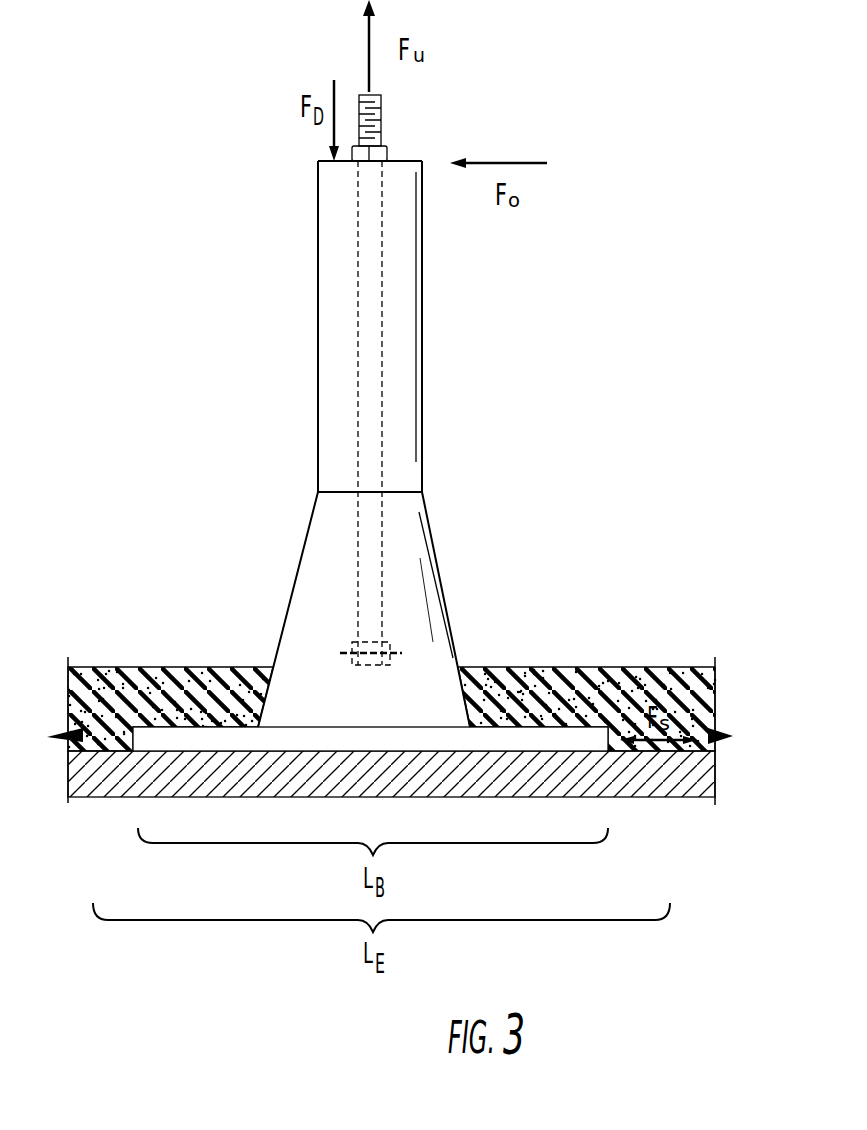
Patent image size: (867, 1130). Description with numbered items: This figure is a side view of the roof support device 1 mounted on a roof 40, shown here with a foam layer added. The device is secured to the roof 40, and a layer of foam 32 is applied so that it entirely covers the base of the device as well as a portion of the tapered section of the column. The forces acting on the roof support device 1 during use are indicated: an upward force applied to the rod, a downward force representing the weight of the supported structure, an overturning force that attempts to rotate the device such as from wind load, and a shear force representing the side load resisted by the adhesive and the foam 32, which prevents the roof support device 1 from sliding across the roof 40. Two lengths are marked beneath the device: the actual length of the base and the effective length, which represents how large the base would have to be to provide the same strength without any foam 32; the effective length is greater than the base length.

The roof support device 1 is at (250, 303).
The foam 32 is at (553, 680).
The roof 40 is at (703, 765).